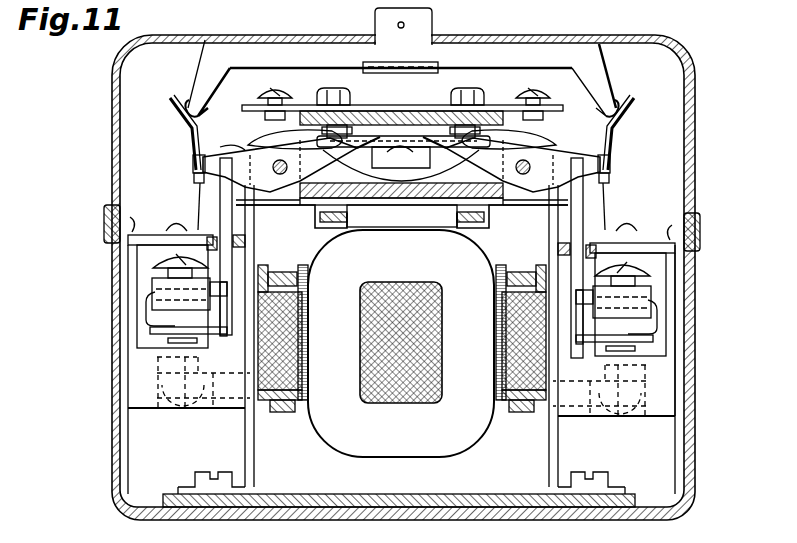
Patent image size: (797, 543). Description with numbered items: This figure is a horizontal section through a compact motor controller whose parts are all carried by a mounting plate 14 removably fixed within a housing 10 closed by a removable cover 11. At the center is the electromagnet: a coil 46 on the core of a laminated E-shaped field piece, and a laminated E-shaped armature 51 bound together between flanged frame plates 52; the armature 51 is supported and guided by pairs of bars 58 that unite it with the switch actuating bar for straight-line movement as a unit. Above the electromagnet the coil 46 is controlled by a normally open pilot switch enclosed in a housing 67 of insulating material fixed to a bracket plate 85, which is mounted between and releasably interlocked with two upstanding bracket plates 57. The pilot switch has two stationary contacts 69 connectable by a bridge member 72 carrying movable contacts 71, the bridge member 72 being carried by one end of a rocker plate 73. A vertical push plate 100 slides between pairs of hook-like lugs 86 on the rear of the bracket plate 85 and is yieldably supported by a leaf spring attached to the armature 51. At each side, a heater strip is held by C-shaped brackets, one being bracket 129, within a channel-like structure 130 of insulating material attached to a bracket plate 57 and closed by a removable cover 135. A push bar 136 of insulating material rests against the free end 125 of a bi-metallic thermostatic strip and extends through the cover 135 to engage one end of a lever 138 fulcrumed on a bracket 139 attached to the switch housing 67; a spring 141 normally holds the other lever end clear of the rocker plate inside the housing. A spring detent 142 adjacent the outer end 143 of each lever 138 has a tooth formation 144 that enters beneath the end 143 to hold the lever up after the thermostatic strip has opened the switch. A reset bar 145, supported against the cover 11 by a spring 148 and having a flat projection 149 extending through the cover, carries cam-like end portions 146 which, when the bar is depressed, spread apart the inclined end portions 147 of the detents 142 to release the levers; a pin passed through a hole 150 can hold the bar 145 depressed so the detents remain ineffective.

The housing 10 is at (698, 373).
The removable cover 11 is at (695, 163).
The mounting plate 14 is at (273, 493).
The coil 46 is at (372, 444).
The armature 51 is at (400, 385).
The flanged frame plates 52 is at (306, 290).
The upstanding bracket plates 57 is at (245, 448).
The bars 58 is at (302, 278).
The housing of insulating material 67 is at (396, 206).
The stationary contacts 69 is at (347, 112).
The movable contacts 71 is at (268, 142).
The bridge member 72 is at (404, 130).
The rocker plate 73 is at (380, 200).
The bracket plate 85 is at (275, 207).
The hook-like lugs 86 is at (328, 230).
The push plate 100 is at (413, 220).
The free end of thermostatic strip 125 is at (150, 333).
The C-shaped bracket 129 is at (145, 314).
The channel-like structure 130 is at (143, 378).
The removable cover 135 is at (110, 222).
The push bar 136 is at (226, 266).
The lever 138 is at (232, 149).
The bracket 139 is at (238, 143).
The spring 141 is at (300, 164).
The spring detent 142 is at (193, 161).
The outer end of lever 143 is at (198, 183).
The tooth formation 144 is at (194, 178).
The reset bar 145 is at (311, 58).
The cam-like end portions 146 is at (186, 100).
The inclined end portions 147 is at (178, 108).
The spring 148 is at (425, 73).
The flat projection 149 is at (432, 25).
The hole 150 is at (398, 25).